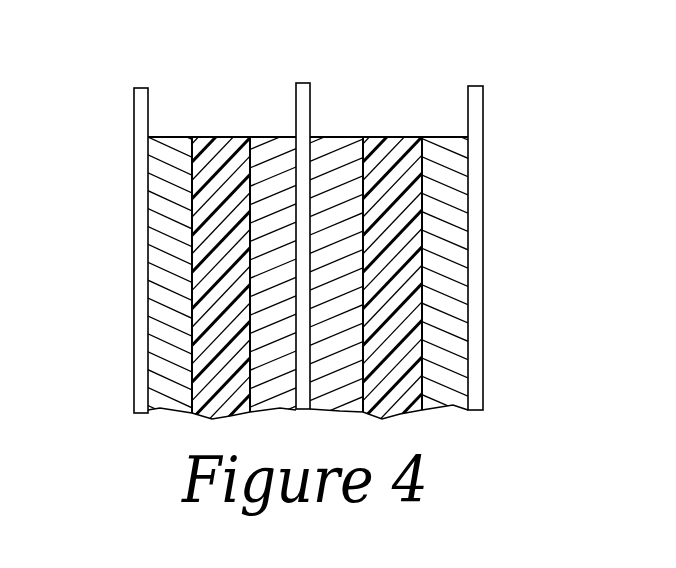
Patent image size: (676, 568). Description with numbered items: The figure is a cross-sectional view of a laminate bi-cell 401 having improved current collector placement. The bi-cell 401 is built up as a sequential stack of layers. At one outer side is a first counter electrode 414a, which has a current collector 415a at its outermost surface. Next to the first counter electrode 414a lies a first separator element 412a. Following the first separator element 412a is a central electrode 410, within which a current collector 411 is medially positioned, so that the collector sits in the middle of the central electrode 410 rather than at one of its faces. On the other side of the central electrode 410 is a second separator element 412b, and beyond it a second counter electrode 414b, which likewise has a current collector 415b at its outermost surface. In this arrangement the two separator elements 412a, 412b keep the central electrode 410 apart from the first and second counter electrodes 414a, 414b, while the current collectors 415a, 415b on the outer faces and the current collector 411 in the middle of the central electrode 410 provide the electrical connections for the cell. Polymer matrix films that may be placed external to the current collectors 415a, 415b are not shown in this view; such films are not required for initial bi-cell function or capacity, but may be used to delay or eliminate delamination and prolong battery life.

The laminate bi-cell 401 is at (520, 272).
The central electrode 410 is at (345, 155).
The current collector 411 is at (307, 88).
The first separator element 412a is at (214, 145).
The second separator element 412b is at (395, 155).
The first counter electrode 414a is at (158, 205).
The second counter electrode 414b is at (457, 185).
The current collector 415a is at (140, 115).
The current collector 415b is at (478, 112).